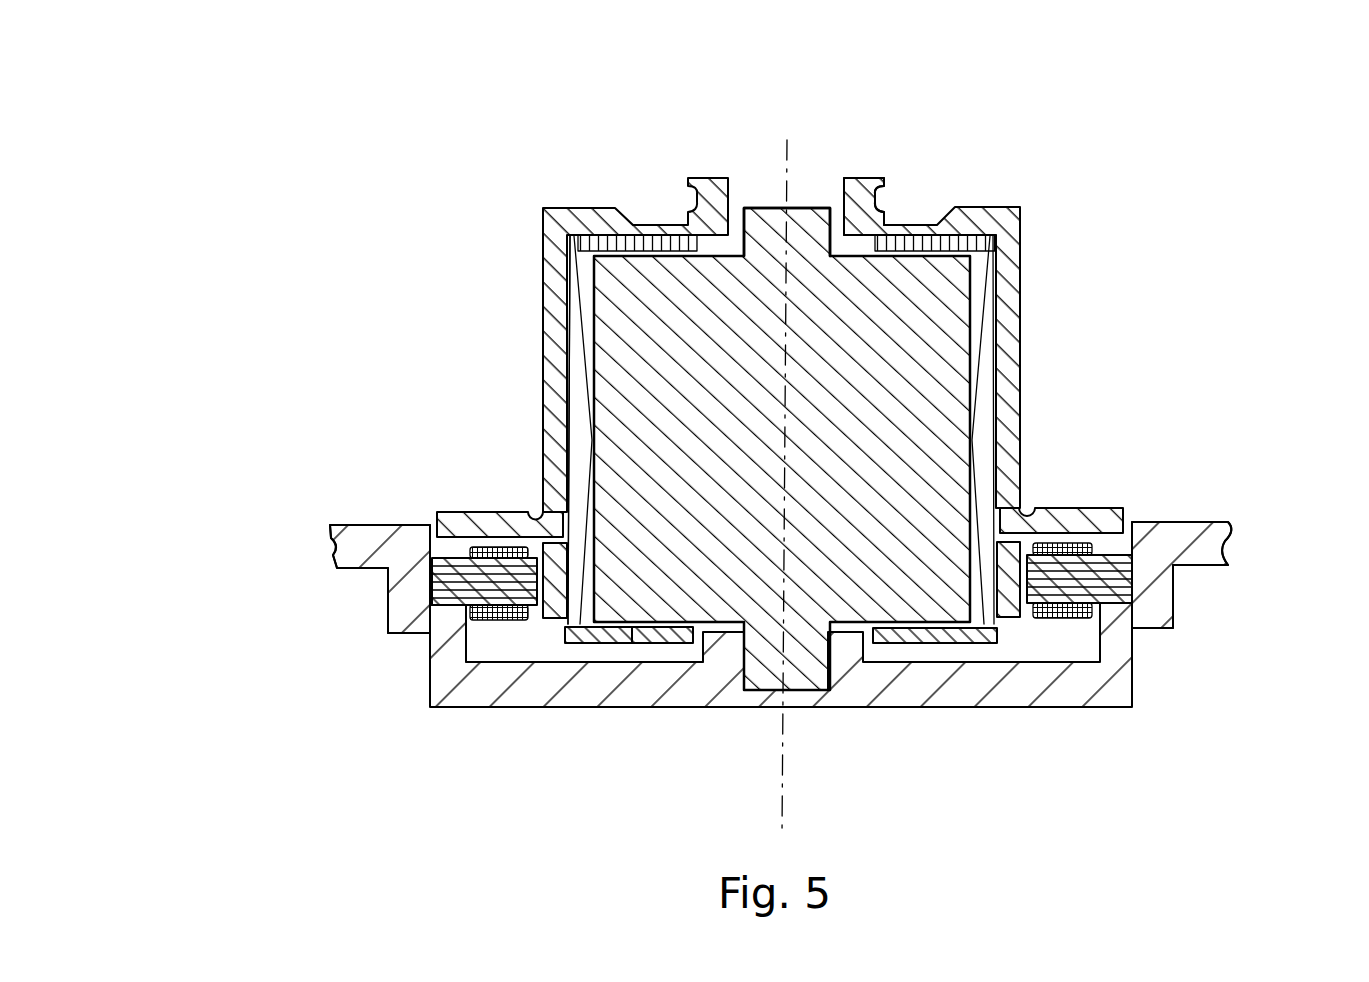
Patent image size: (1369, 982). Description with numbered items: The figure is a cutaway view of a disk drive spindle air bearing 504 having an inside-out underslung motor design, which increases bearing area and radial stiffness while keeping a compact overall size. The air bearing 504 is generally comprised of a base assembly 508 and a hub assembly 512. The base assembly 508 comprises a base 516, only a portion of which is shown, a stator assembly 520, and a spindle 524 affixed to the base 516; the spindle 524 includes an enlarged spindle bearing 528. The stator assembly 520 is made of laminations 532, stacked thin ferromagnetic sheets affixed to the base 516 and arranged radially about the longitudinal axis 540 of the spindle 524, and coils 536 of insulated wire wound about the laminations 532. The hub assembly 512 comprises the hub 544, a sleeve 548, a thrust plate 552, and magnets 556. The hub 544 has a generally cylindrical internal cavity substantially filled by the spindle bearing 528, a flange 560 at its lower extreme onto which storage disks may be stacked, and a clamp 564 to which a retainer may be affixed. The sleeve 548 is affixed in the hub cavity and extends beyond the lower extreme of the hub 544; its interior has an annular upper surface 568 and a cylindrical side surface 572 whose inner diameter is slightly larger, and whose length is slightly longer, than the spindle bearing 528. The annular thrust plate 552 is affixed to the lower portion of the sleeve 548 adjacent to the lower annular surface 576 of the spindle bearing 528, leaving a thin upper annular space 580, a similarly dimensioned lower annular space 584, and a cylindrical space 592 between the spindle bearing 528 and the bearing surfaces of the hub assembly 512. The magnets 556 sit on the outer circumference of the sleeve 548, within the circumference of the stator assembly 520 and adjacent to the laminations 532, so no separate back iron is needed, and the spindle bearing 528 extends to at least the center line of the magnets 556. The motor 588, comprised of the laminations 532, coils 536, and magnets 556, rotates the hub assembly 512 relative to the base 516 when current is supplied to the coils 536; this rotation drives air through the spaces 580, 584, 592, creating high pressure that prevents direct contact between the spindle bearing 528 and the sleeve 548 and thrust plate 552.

The air bearing 504 is at (790, 102).
The base assembly 508 is at (1170, 662).
The hub assembly 512 is at (824, 440).
The base 516 is at (1210, 552).
The stator assembly 520 is at (503, 632).
The spindle 524 is at (812, 206).
The spindle bearing 528 is at (892, 397).
The laminations 532 is at (482, 577).
The coils 536 is at (464, 624).
The longitudinal axis 540 is at (793, 138).
The hub 544 is at (1010, 265).
The sleeve 548 is at (990, 363).
The thrust plate 552 is at (928, 637).
The magnets 556 is at (1008, 600).
The flange 560 is at (1062, 506).
The clamp 564 is at (882, 185).
The annular upper surface 568 is at (632, 228).
The cylindrical side surface 572 is at (572, 282).
The lower annular surface 576 is at (633, 628).
The upper annular space 580 is at (658, 251).
The lower annular space 584 is at (675, 627).
The motor 588 is at (377, 578).
The cylindrical space 592 is at (588, 385).